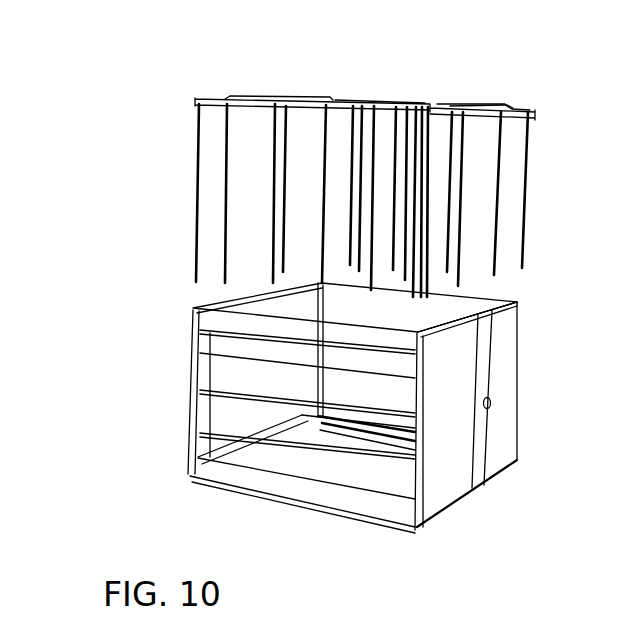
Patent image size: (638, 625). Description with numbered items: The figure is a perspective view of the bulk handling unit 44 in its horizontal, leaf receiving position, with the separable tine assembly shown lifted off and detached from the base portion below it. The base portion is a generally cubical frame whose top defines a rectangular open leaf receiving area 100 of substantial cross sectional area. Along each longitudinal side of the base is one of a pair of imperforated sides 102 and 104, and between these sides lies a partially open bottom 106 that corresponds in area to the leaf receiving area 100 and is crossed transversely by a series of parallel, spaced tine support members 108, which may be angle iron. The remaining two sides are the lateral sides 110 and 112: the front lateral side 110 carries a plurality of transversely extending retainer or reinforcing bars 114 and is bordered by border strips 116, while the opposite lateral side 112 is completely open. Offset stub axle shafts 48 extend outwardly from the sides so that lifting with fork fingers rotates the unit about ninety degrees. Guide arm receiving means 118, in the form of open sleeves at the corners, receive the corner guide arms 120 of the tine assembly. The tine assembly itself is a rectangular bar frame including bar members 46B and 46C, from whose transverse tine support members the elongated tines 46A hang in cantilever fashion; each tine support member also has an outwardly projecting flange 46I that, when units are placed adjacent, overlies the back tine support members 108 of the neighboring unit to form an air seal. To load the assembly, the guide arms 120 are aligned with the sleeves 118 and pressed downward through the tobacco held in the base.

The bulk handling unit 44 is at (91, 430).
The tines 46A is at (285, 178).
The bar member 46B is at (257, 103).
The bar member 46C is at (513, 113).
The outwardly projecting flange 46I is at (443, 102).
The stub axle shaft 48 is at (491, 403).
The leaf receiving area 100 is at (292, 308).
The imperforated side 102 is at (507, 362).
The imperforated side 104 is at (310, 314).
The partially open bottom 106 is at (288, 463).
The tine support member 108 is at (333, 464).
The front lateral side 110 is at (243, 412).
The lateral side 112 is at (430, 323).
The retainer bar 114 is at (208, 351).
The border strip 116 is at (210, 320).
The guide arm receiving sleeve 118 is at (323, 292).
The corner guide arm 120 is at (443, 101).